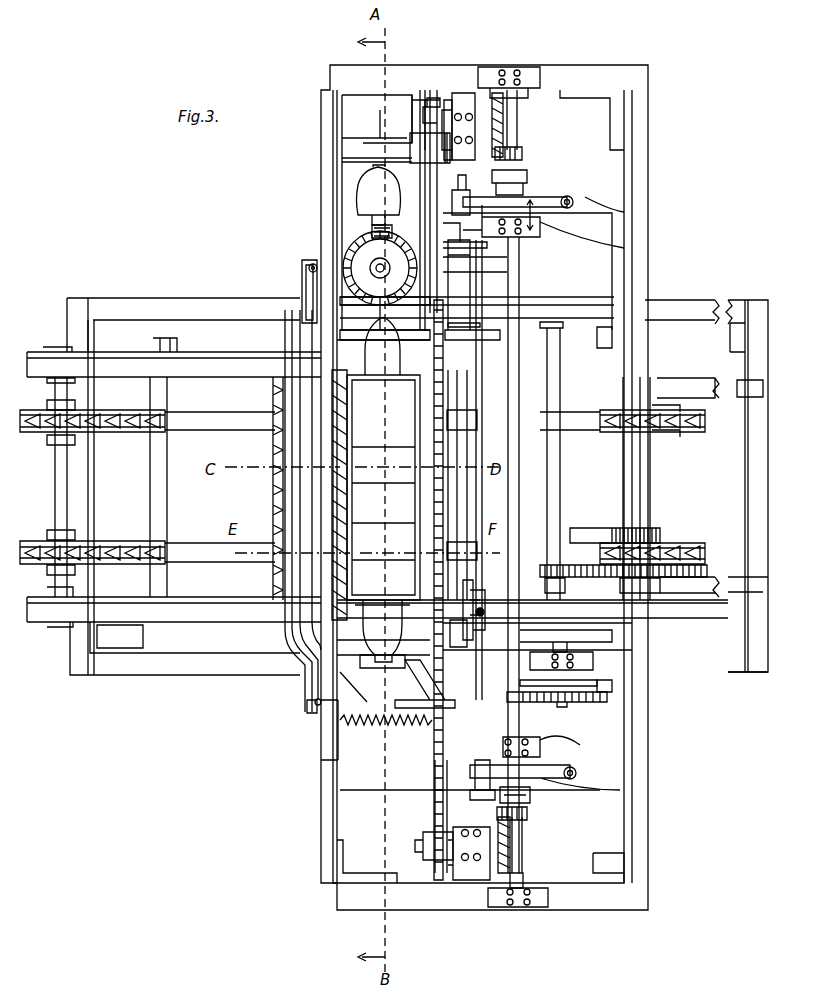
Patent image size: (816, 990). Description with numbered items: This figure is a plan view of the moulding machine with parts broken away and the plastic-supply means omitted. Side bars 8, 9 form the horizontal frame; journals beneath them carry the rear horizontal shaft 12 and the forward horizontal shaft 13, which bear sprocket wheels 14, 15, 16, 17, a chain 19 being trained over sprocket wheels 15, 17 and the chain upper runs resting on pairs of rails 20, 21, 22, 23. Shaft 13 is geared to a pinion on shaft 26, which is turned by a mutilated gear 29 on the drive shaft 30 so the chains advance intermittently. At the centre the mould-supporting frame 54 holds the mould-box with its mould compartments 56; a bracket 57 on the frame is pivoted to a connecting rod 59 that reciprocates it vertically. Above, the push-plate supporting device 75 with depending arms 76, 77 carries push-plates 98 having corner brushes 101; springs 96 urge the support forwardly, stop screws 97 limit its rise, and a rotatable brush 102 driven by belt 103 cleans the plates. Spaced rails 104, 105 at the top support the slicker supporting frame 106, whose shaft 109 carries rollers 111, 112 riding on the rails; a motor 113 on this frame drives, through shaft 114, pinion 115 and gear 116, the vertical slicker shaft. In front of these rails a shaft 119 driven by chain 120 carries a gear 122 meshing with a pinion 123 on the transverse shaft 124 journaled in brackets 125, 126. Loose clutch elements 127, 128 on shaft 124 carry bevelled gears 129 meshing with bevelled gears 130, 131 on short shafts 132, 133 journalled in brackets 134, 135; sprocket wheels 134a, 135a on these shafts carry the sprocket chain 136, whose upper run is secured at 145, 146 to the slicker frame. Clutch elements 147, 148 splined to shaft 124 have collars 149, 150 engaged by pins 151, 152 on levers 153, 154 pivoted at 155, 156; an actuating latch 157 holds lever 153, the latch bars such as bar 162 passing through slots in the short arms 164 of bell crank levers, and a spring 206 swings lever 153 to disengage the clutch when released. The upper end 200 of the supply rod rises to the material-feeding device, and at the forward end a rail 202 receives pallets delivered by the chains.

The side bar 8 is at (110, 350).
The side bar 9 is at (178, 607).
The horizontal shaft 12 is at (60, 490).
The horizontal shaft 13 is at (125, 562).
The sprocket wheel 14 is at (70, 541).
The sprocket wheel 15 is at (50, 432).
The sprocket wheel 16 is at (700, 546).
The sprocket wheel 17 is at (672, 440).
The endless chain 19 is at (125, 430).
The chain-supporting rail 20 is at (208, 558).
The chain-supporting rail 21 is at (537, 560).
The chain-supporting rail 22 is at (212, 420).
The chain-supporting rail 23 is at (574, 418).
The shaft 26 is at (624, 466).
The mutilated gear 29 is at (592, 528).
The drive shaft 30 is at (652, 486).
The mould-supporting frame 54 is at (372, 360).
The mould compartments 56 is at (383, 487).
The bracket 57 is at (375, 672).
The connecting rod 59 is at (400, 665).
The push-plate supporting device 75 is at (298, 518).
The depending arm 76 is at (308, 704).
The depending arm 77 is at (300, 268).
The spring 96 is at (340, 730).
The stop screw 97 is at (380, 724).
The push-plate 98 is at (272, 500).
The brush 101 is at (270, 448).
The rotatable brush 102 is at (352, 420).
The belt 103 is at (200, 350).
The guide rail 104 is at (330, 95).
The guide rail 105 is at (448, 130).
The slicker supporting frame 106 is at (338, 172).
The shaft 109 is at (330, 120).
The roller 111 is at (340, 300).
The roller 112 is at (332, 148).
The motor 113 is at (356, 197).
The motor shaft 114 is at (345, 226).
The pinion 115 is at (343, 240).
The gear 116 is at (345, 300).
The shaft 119 is at (560, 633).
The chain 120 is at (598, 683).
The gear 122 is at (612, 702).
The pinion 123 is at (520, 702).
The transverse shaft 124 is at (521, 436).
The bracket 125 is at (540, 908).
The bracket 126 is at (528, 72).
The clutch element 127 is at (529, 815).
The clutch element 128 is at (523, 152).
The bevelled gear 129 is at (520, 133).
The bevelled gear 130 is at (505, 878).
The bevelled gear 131 is at (504, 108).
The short shaft 132 is at (418, 845).
The short shaft 133 is at (418, 125).
The bracket 134 is at (472, 868).
The sprocket wheel 134a is at (458, 858).
The bracket 135 is at (465, 95).
The sprocket wheel 135a is at (412, 95).
The sprocket chain 136 is at (436, 120).
The chain securing point 145 is at (472, 316).
The chain securing point 146 is at (370, 160).
The clutch element 147 is at (532, 797).
The clutch element 148 is at (528, 172).
The collar 149 is at (542, 748).
The collar 150 is at (482, 236).
The pin 151 is at (435, 795).
The pin 152 is at (535, 197).
The lever 153 is at (622, 792).
The lever 154 is at (626, 216).
The pivot point 155 is at (577, 773).
The pivot point 156 is at (573, 200).
The actuating latch 157 is at (468, 196).
The bar 162 is at (492, 308).
The short arm 164 is at (445, 290).
The upper end of rod 200 is at (486, 612).
The rail 202 is at (690, 390).
The spring 206 is at (626, 248).